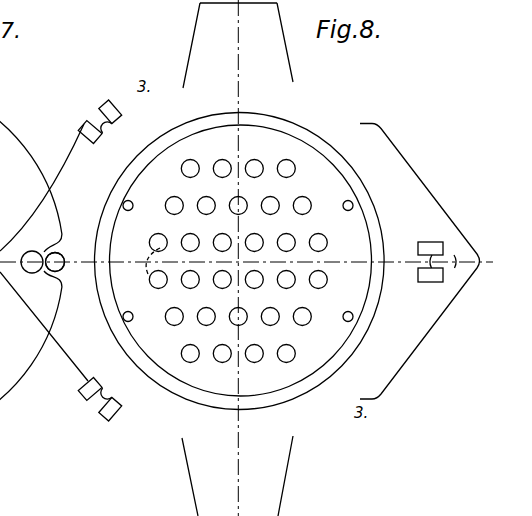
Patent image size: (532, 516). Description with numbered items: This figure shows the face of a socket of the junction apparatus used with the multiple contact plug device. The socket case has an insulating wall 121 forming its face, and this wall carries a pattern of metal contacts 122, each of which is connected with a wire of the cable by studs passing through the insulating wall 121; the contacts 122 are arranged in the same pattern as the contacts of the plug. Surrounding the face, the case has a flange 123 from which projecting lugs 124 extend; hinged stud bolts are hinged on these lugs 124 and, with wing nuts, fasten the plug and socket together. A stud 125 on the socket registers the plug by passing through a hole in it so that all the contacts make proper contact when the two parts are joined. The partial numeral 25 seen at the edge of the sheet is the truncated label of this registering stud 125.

The insulating wall 121 is at (158, 177).
The metal contacts 122 is at (319, 242).
The flange 123 is at (358, 152).
The projecting lugs 124 is at (87, 125).
The boss 25 is at (55, 262).
The stud 125 is at (55, 262).